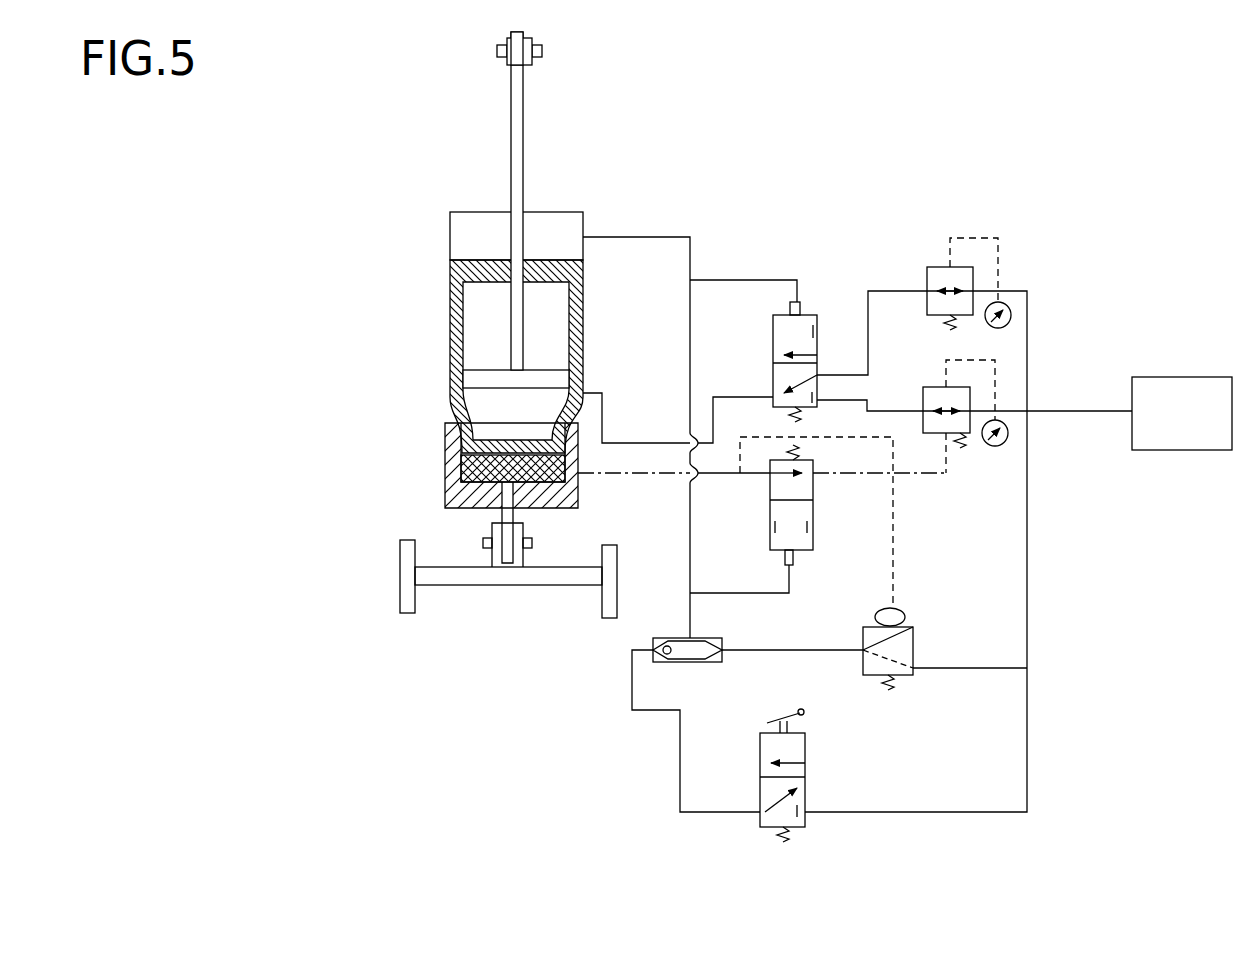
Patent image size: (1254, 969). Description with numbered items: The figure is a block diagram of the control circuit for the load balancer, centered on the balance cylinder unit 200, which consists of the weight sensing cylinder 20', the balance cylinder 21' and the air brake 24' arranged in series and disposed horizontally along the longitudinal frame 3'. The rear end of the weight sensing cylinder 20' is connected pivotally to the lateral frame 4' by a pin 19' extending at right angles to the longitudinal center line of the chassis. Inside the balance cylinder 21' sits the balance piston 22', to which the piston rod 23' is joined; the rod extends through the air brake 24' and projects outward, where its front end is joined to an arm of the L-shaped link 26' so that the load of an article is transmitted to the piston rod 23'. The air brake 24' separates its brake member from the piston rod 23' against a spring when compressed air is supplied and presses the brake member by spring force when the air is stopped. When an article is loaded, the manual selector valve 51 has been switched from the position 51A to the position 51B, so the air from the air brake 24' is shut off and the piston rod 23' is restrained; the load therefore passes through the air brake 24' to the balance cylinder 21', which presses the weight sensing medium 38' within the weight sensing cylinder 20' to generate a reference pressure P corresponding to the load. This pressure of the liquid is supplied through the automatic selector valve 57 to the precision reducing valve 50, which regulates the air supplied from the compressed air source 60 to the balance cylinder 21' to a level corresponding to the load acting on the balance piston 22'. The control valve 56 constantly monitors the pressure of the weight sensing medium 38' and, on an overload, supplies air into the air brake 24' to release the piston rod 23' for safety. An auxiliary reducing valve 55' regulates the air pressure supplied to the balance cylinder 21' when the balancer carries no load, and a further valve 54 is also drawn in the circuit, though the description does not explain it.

The balance cylinder unit 200 is at (408, 263).
The air brake 24' is at (576, 216).
The balance cylinder 21' is at (470, 356).
The balance piston 22' is at (569, 355).
The piston rod 23' is at (571, 201).
The L-shaped link 26' is at (568, 65).
The weight sensing cylinder 20' is at (558, 473).
The weight sensing medium 38' is at (461, 457).
The reference pressure P is at (540, 490).
The pin 19' is at (447, 526).
The lateral frame 4' is at (508, 617).
The longitudinal frame 3' is at (471, 592).
The solenoid directional valve 54 is at (810, 318).
The auxiliary reducing valve 55' is at (955, 253).
The precision reducing valve 50 is at (930, 387).
The compressed air source 60 is at (1198, 377).
The automatic selector valve 57 is at (802, 552).
The control valve 56 is at (915, 628).
The manual selector valve 51 is at (800, 757).
The position of manual selector valve 51A is at (760, 747).
The position of manual selector valve 51B is at (760, 795).